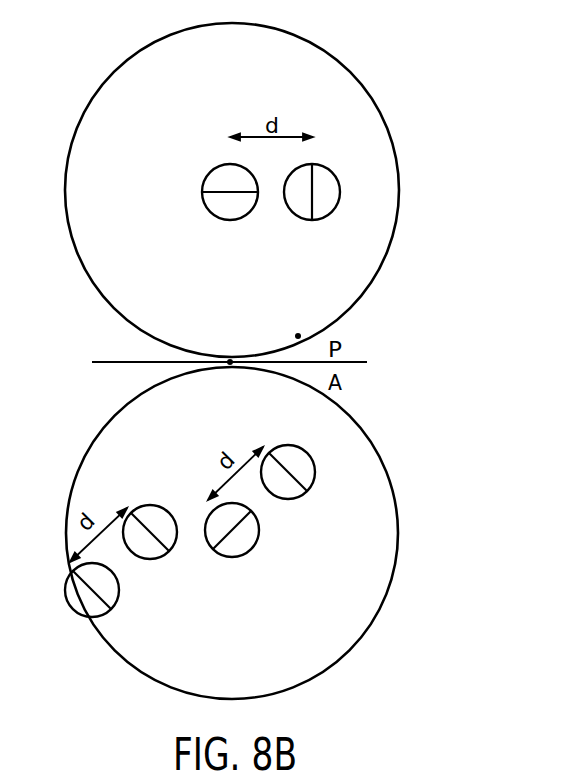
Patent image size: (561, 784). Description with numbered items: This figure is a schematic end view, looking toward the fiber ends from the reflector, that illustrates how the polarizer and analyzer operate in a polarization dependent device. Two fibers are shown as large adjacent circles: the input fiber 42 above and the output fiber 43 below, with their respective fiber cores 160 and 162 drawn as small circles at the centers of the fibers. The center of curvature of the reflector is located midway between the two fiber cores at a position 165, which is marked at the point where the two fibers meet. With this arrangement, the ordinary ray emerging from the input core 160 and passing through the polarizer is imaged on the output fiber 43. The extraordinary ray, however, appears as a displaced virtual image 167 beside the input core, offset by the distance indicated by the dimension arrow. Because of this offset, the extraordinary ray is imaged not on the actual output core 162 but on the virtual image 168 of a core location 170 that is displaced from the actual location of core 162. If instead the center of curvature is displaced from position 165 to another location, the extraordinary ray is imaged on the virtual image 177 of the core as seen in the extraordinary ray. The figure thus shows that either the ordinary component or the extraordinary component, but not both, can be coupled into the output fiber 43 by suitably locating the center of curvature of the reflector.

The input fiber 42 is at (318, 47).
The output fiber 43 is at (360, 427).
The fiber core 160 is at (203, 180).
The displaced virtual image 167 is at (292, 212).
The center of curvature position 165 is at (230, 360).
The core location 170 is at (298, 335).
The virtual image of core location 168 is at (157, 506).
The virtual image of the core in the extraordinary ray 177 is at (289, 499).
The fiber core 162 is at (237, 557).